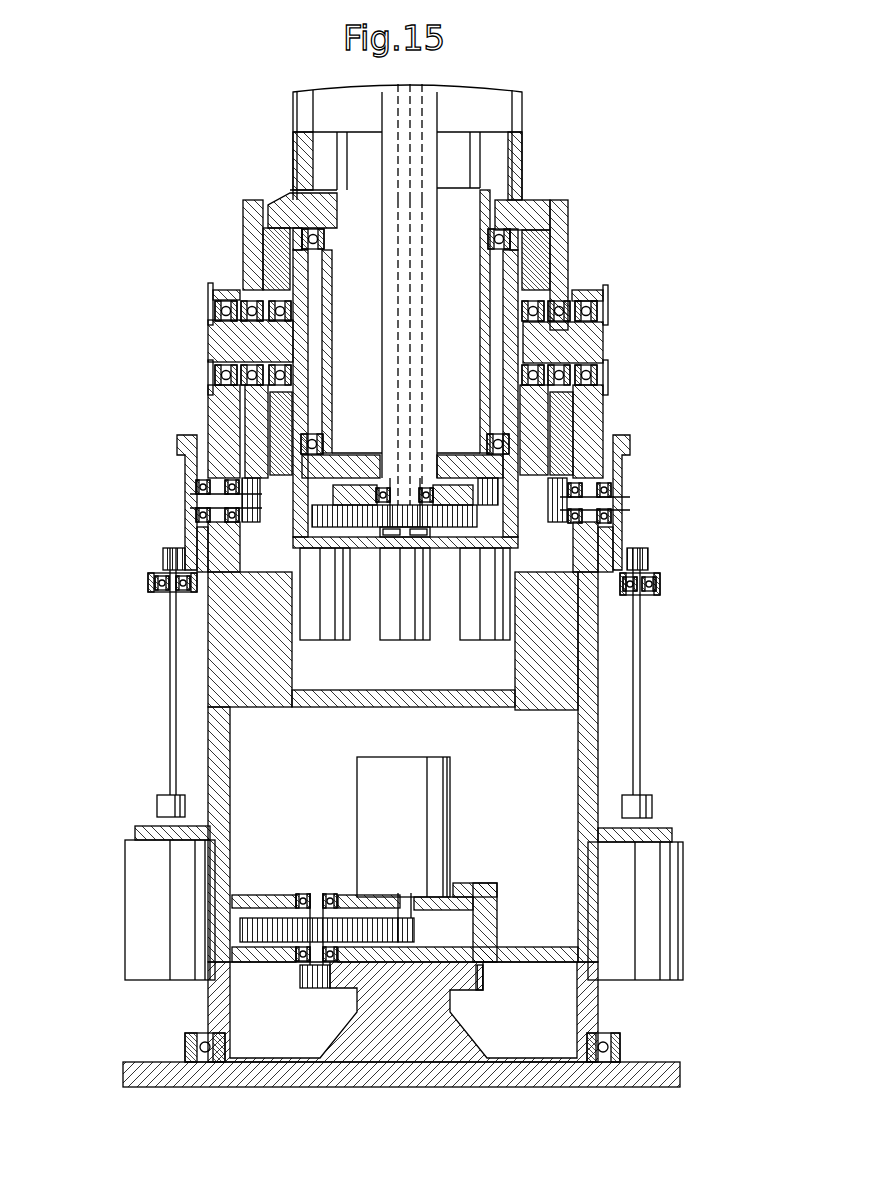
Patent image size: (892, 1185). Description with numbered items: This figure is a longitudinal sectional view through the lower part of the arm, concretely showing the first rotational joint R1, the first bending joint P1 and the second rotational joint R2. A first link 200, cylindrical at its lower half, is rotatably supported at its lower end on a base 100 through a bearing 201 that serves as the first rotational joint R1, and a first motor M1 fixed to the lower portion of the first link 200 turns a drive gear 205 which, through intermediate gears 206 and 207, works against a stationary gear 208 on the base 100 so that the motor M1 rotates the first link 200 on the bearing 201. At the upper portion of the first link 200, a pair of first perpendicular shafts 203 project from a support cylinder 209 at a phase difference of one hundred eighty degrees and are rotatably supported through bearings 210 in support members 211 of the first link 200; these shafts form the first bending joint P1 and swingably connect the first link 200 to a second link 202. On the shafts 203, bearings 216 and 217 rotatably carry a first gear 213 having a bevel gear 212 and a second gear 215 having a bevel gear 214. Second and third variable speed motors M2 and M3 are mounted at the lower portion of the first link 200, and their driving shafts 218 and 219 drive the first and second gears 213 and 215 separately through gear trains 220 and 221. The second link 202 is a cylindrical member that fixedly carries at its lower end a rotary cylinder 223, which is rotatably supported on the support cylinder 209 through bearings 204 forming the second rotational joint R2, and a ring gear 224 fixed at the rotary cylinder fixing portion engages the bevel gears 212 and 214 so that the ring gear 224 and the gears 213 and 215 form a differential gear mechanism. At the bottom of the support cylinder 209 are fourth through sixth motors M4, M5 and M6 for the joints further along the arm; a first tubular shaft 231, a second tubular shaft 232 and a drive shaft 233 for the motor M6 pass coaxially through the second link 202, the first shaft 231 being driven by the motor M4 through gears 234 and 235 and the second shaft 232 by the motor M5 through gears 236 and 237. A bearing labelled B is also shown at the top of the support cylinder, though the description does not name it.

The base 100 is at (672, 1077).
The first link 200 is at (601, 657).
The bearing 201 is at (608, 1037).
The second link 202 is at (533, 156).
The first perpendicular shafts 203 is at (228, 337).
The bearings 204 is at (393, 365).
The drive gear 205 is at (417, 933).
The intermediate gear 206 is at (262, 927).
The intermediate gear 207 is at (310, 984).
The stationary gear 208 is at (483, 973).
The support cylinder 209 is at (507, 276).
The bearings 210 is at (225, 305).
The support members 211 is at (223, 418).
The bevel gear 212 is at (277, 240).
The first gear 213 is at (243, 207).
The bevel gear 214 is at (543, 224).
The second gear 215 is at (563, 253).
The bearing 216 is at (257, 300).
The bearing 217 is at (588, 292).
The driving shaft 218 is at (165, 688).
The driving shaft 219 is at (637, 757).
The gear train 220 is at (182, 536).
The gear train 221 is at (626, 521).
The rotary cylinder 223 is at (330, 310).
The ring gear 224 is at (535, 200).
The first tubular shaft 231 is at (440, 122).
The second tubular shaft 232 is at (412, 278).
The drive shaft 233 is at (428, 102).
The gear 234 is at (548, 480).
The gear 235 is at (453, 490).
The gear 236 is at (310, 508).
The gear 237 is at (370, 527).
The first motor M1 is at (437, 820).
The second motor M2 is at (157, 897).
The third motor M3 is at (665, 893).
The fourth motor M4 is at (490, 637).
The fifth motor M5 is at (307, 598).
The sixth motor M6 is at (415, 628).
The bearing B is at (318, 446).
The first bending joint P1 is at (612, 340).
The first rotational joint R1 is at (630, 1047).
The second rotational joint R2 is at (257, 190).